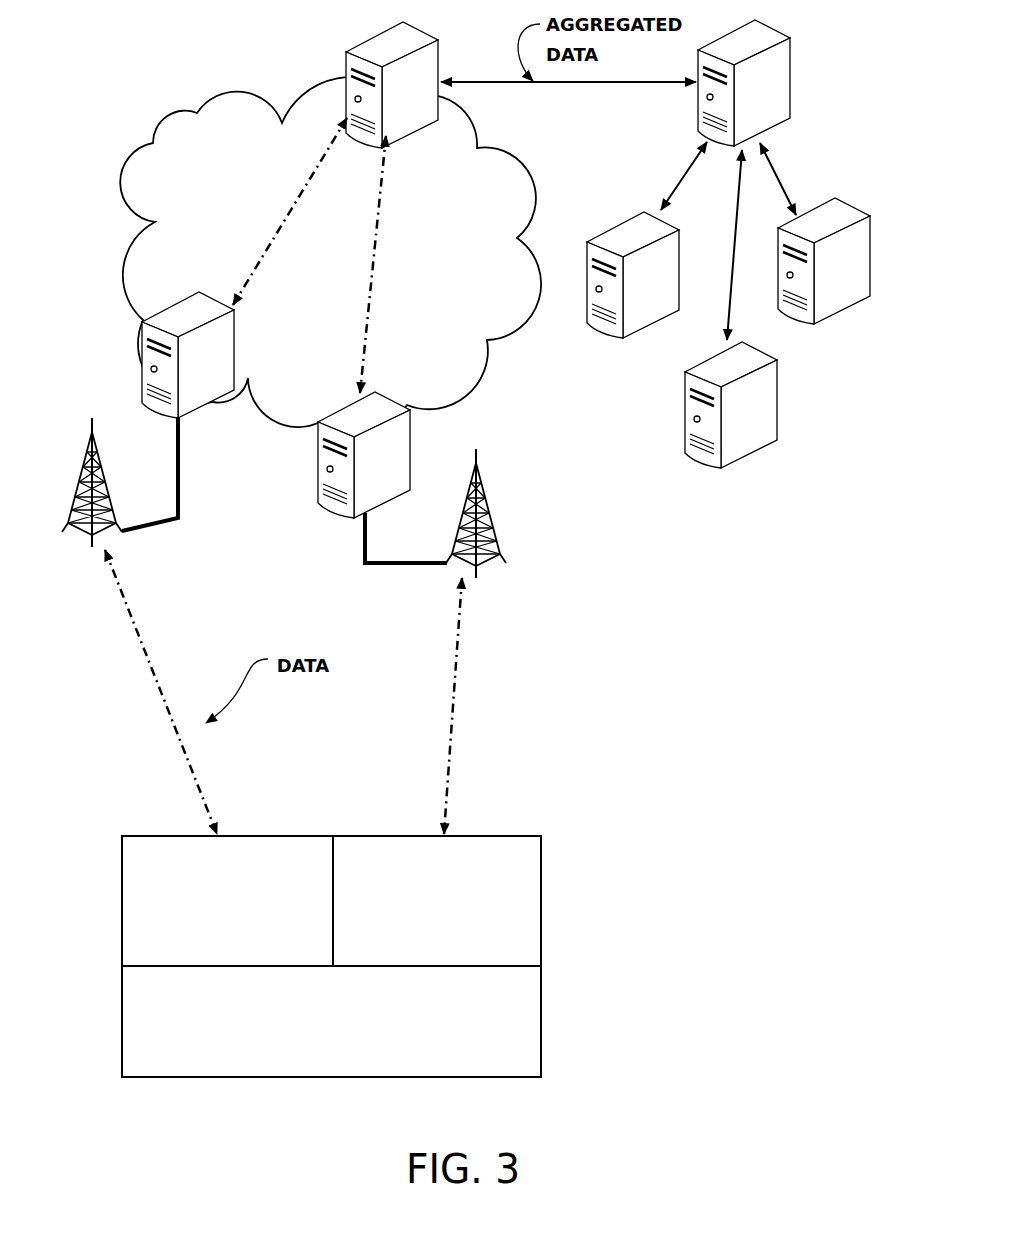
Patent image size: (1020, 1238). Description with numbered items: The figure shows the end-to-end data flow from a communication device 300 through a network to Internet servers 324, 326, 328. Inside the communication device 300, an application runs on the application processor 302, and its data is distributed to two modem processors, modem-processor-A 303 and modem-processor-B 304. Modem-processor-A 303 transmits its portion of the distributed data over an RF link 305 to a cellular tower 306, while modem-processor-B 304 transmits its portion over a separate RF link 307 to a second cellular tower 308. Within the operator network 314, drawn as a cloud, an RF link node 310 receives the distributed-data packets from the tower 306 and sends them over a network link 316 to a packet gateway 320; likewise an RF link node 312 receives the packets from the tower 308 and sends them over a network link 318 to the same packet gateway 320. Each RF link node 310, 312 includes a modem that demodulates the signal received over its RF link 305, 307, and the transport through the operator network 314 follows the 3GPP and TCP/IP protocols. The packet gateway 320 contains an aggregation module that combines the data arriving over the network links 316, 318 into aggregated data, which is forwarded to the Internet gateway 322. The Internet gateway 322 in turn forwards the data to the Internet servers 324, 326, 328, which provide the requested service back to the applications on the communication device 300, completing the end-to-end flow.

The communication device 300 is at (541, 1046).
The application processor 302 is at (331, 1021).
The modem-processor-A 303 is at (227, 901).
The modem-processor-B 304 is at (437, 901).
The RF link 305 is at (148, 648).
The cellular tower 306 is at (120, 482).
The RF link 307 is at (456, 696).
The cellular tower 308 is at (447, 513).
The RF link node 310 is at (203, 390).
The RF link node 312 is at (412, 450).
The operator network 314 is at (197, 113).
The network link 316 is at (290, 211).
The network link 318 is at (371, 264).
The packet gateway 320 is at (346, 62).
The Internet gateway 322 is at (790, 50).
The Internet server 324 is at (597, 332).
The Internet server 326 is at (752, 452).
The Internet server 328 is at (817, 322).